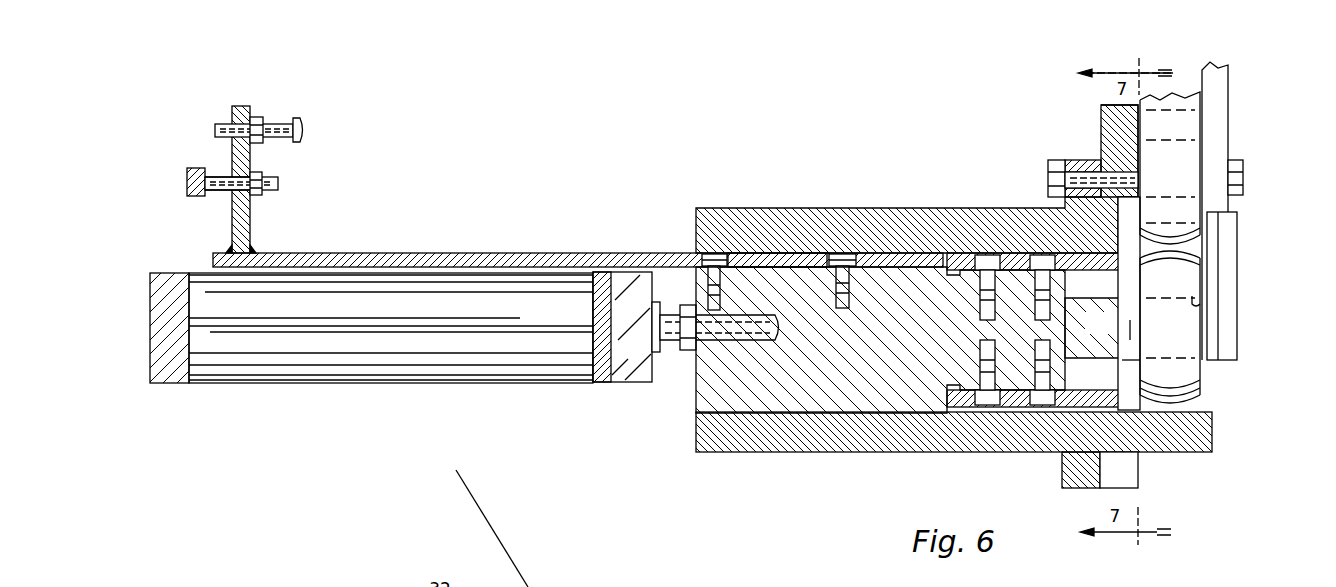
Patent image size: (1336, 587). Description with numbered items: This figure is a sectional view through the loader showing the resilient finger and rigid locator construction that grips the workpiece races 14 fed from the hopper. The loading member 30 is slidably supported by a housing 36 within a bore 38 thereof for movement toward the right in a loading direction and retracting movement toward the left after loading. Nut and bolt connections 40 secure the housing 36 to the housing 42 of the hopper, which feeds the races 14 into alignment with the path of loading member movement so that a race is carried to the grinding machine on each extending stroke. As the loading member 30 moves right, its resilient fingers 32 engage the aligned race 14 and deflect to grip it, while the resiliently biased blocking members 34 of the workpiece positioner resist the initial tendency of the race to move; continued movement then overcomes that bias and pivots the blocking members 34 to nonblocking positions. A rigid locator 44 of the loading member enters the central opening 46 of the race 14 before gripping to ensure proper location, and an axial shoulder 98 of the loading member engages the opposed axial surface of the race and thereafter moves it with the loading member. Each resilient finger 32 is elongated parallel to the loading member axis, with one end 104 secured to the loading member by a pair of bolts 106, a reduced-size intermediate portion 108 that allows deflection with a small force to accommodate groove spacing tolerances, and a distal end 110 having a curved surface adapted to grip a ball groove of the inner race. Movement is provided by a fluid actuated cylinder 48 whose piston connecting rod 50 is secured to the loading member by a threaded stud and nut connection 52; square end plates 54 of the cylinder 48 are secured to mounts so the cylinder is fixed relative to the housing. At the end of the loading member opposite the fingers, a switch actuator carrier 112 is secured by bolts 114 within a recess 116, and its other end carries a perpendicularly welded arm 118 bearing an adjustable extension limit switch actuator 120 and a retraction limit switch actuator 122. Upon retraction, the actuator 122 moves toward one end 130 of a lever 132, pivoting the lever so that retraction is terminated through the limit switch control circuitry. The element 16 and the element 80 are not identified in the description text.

The workpiece race 14 is at (1200, 146).
The rail 16 is at (1239, 92).
The loading member 30 is at (833, 417).
The resilient fingers 32 is at (1057, 251).
The blocking members 34 is at (1237, 223).
The housing 36 is at (925, 208).
The bore 38 is at (890, 406).
The nut and bolt connections 40 is at (1053, 160).
The hopper housing 42 is at (1101, 125).
The rigid locator 44 is at (1130, 324).
The central opening 46 is at (1200, 303).
The fluid actuated cylinder 48 is at (462, 394).
The piston connecting rod 50 is at (670, 334).
The threaded stud and nut connection 52 is at (685, 351).
The square end plates 54 is at (176, 378).
The lower member 80 is at (1135, 359).
The axial shoulder 98 is at (1065, 405).
The finger end 104 is at (1008, 255).
The bolts 106 is at (1035, 296).
The intermediate portion 108 is at (1097, 302).
The distal end 110 is at (1133, 338).
The switch actuator carrier 112 is at (516, 252).
The bolts 114 is at (716, 253).
The recess 116 is at (790, 255).
The arm 118 is at (243, 208).
The extension limit switch actuator 120 is at (304, 136).
The retraction limit switch actuator 122 is at (224, 198).
The lever end 130 is at (190, 167).
The lever 132 is at (186, 186).